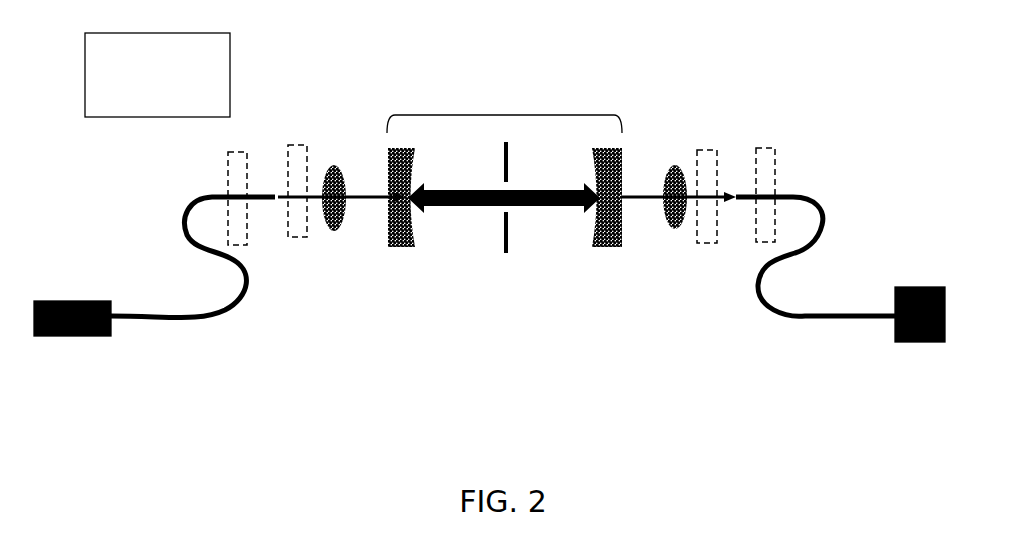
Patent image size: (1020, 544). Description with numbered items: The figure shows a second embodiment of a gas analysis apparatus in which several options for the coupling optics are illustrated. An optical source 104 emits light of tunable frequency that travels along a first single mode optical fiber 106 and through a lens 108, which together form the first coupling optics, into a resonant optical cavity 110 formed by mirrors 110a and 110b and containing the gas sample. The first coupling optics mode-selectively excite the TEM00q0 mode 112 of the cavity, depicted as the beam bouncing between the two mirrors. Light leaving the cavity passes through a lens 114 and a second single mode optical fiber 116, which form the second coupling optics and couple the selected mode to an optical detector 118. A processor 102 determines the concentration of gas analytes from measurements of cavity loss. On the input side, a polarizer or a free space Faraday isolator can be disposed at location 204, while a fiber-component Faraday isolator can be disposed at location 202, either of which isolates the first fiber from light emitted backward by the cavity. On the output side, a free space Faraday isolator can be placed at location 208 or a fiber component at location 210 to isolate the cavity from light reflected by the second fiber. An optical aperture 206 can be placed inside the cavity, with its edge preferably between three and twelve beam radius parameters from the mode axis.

The processor 102 is at (136, 90).
The optical source 104 is at (78, 336).
The first single mode optical fiber 106 is at (200, 320).
The lens 108 is at (338, 165).
The resonant optical cavity 110 is at (505, 114).
The mirror 110a is at (402, 245).
The mirror 110b is at (603, 245).
The TEM00q0 mode 112 is at (462, 207).
The lens 114 is at (673, 230).
The second single mode optical fiber 116 is at (808, 322).
The optical detector 118 is at (922, 342).
The location for fiber Faraday isolator 202 is at (238, 174).
The location for polarizer or free space Faraday isolator 204 is at (301, 232).
The optical aperture 206 is at (508, 242).
The location for free space Faraday isolator 208 is at (712, 150).
The location for fiber Faraday isolator 210 is at (765, 160).